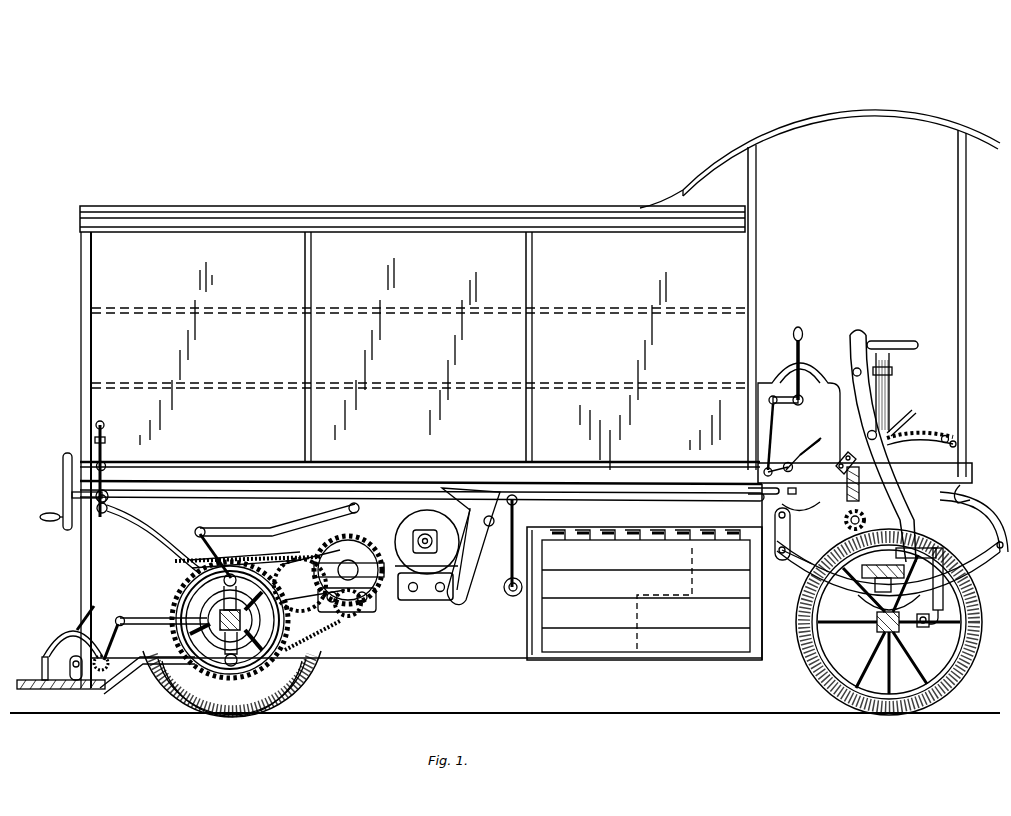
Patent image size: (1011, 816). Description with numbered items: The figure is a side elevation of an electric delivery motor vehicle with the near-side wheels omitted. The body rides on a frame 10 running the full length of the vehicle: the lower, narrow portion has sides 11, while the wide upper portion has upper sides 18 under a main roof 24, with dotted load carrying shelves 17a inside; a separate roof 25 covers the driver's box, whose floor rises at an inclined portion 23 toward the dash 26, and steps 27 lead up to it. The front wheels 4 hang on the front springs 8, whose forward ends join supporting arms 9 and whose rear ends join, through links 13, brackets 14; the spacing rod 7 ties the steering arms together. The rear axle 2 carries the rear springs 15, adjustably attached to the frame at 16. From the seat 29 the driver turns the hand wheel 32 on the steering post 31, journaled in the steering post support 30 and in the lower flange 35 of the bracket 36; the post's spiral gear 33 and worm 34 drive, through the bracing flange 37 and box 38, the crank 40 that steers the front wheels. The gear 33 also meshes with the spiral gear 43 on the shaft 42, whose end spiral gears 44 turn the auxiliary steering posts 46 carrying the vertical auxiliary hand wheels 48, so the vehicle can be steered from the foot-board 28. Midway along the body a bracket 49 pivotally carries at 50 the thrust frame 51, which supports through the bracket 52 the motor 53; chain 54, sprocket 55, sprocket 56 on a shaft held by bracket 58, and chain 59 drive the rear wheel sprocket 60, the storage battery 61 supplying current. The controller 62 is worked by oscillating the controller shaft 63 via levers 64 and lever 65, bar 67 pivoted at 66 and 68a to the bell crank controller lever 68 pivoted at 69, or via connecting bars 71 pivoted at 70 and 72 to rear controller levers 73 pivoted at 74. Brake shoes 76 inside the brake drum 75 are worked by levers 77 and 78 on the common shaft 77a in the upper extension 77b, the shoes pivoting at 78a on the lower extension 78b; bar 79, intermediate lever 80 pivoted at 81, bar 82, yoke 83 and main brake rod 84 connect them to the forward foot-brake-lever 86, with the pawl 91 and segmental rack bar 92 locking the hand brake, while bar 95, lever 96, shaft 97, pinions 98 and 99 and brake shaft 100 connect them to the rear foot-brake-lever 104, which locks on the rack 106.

The rear axle 2 is at (220, 625).
The front wheels 4 is at (813, 650).
The spacing rod 7 is at (873, 640).
The front springs 8 is at (843, 590).
The forward supporting arms 9 is at (975, 520).
The frame 10 is at (865, 473).
The sides 11 is at (427, 572).
The links 13 is at (778, 560).
The brackets 14 is at (746, 519).
The rear springs 15 is at (156, 540).
The rear spring connection 16 is at (348, 506).
The load carrying shelves 17a is at (192, 396).
The upper sides 18 is at (420, 460).
The inclined forward portion 23 is at (950, 430).
The main roof 24 is at (386, 214).
The driver's box roof 25 is at (838, 112).
The dash 26 is at (967, 413).
The steps 27 is at (664, 600).
The foot-board 28 is at (61, 693).
The seat 29 is at (818, 370).
The steering post support 30 is at (892, 396).
The steering post 31 is at (892, 368).
The hand wheel 32 is at (892, 341).
The spiral gear 33 is at (907, 512).
The worm 34 is at (920, 548).
The lower flange 35 is at (883, 585).
The bracket 36 is at (808, 592).
The bracing flange 37 is at (966, 496).
The box 38 is at (943, 552).
The crank 40 is at (944, 578).
The shaft 42 is at (843, 498).
The spiral gear 43 is at (797, 554).
The spiral gear 44 is at (855, 473).
The auxiliary steering post 46 is at (598, 500).
The auxiliary hand wheel 48 is at (63, 470).
The bracket 49 is at (471, 546).
The pivotal connection 50 is at (486, 533).
The thrust frame 51 is at (470, 549).
The bracket 52 is at (428, 600).
The motor 53 is at (427, 541).
The chain 54 is at (350, 617).
The sprocket 55 is at (360, 540).
The sprocket 56 is at (333, 598).
The bracket 58 is at (374, 608).
The chain 59 is at (283, 552).
The rear wheel sprocket 60 is at (309, 580).
The storage battery 61 is at (644, 593).
The controller 62 is at (800, 512).
The controller shaft 63 is at (752, 489).
The levers 64 is at (795, 457).
The lever 65 is at (814, 446).
The pivot 66 is at (785, 464).
The bar 67 is at (774, 430).
The bell crank controller lever 68 is at (794, 362).
The pivot 68a is at (769, 400).
The pivot 69 is at (801, 404).
The pivot 70 is at (800, 456).
The connecting bar 71 is at (656, 480).
The pivot 72 is at (108, 466).
The rear controller lever 73 is at (106, 452).
The pivot 74 is at (108, 492).
The brake drum 75 is at (185, 665).
The friction shoes 76 is at (305, 658).
The lever 77 is at (224, 555).
The common shaft 77a is at (196, 564).
The upper extension 77b is at (196, 575).
The lever 78 is at (214, 598).
The pivot 78a is at (234, 667).
The lower extension 78b is at (282, 690).
The bar 79 is at (275, 520).
The intermediate lever 80 is at (510, 560).
The pivot 81 is at (514, 596).
The bar 82 is at (570, 503).
The yoke 83 is at (776, 530).
The main brake rod 84 is at (800, 484).
The forward foot-brake-lever 86 is at (907, 416).
The pawl 91 is at (861, 435).
The segmental rack bar 92 is at (918, 444).
The bar 95 is at (152, 624).
The lever 96 is at (121, 642).
The shaft 97 is at (102, 672).
The pinion 98 is at (147, 675).
The pinion 99 is at (75, 681).
The brake shaft 100 is at (68, 664).
The rear foot-brake-lever 104 is at (82, 620).
The rack 106 is at (52, 643).